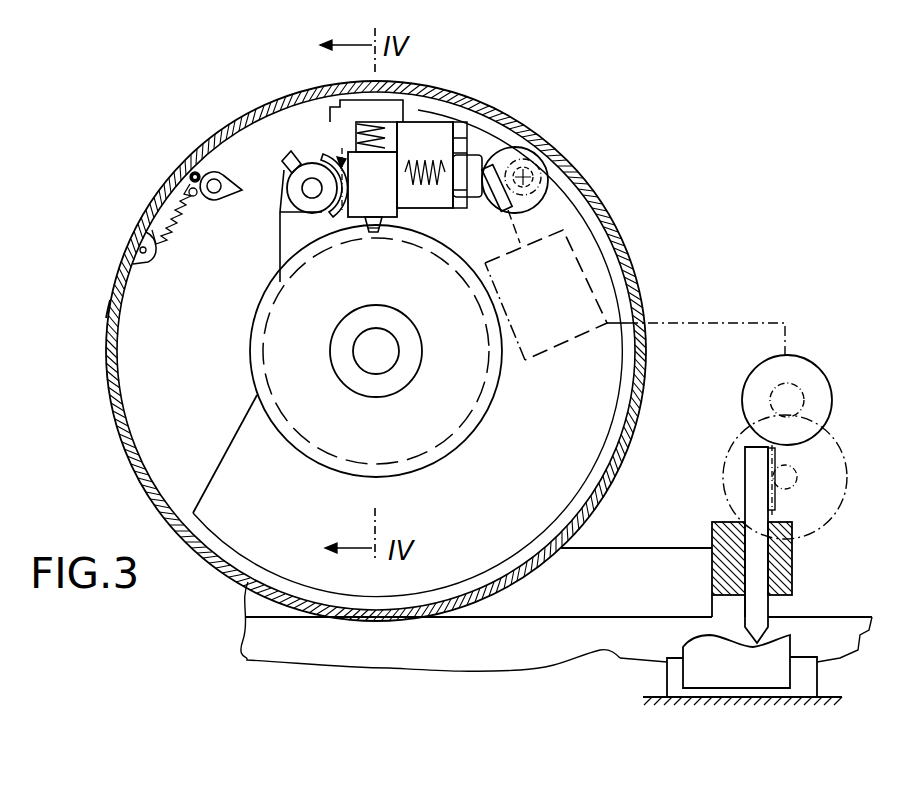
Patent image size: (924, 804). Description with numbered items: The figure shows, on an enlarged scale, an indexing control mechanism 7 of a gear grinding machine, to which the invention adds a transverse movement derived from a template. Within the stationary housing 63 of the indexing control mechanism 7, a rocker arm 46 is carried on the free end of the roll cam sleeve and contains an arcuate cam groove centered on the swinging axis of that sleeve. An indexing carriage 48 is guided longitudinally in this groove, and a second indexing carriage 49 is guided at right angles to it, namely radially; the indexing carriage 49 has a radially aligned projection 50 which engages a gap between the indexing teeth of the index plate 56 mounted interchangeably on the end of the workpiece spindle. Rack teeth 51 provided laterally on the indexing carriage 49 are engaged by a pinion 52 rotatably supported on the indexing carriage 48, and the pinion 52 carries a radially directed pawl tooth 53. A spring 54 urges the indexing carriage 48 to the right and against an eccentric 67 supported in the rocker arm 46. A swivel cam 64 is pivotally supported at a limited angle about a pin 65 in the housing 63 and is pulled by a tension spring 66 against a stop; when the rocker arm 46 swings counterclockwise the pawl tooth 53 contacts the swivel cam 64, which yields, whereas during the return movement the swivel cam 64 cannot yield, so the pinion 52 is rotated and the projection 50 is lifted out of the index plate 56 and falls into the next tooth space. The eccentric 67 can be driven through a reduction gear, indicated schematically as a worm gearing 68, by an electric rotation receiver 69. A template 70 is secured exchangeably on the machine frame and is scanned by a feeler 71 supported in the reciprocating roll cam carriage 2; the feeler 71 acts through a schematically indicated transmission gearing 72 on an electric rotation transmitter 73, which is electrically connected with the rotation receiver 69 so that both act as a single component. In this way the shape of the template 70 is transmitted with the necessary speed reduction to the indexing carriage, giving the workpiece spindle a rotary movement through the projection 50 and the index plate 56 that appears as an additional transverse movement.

The roll cam carriage 2 is at (607, 565).
The indexing control mechanism 7 is at (112, 437).
The rocker arm 46 is at (248, 440).
The indexing carriage 48 is at (415, 135).
The indexing carriage 49 is at (358, 165).
The projection 50 is at (375, 234).
The rack teeth 51 is at (335, 170).
The pinion 52 is at (343, 170).
The pawl tooth 53 is at (282, 162).
The spring 54 is at (437, 150).
The index plate 56 is at (270, 312).
The stationary housing 63 is at (106, 318).
The swivel cam 64 is at (236, 198).
The pin 65 is at (190, 173).
The tension spring 66 is at (153, 214).
The eccentric 67 is at (506, 153).
The worm gearing 68 is at (497, 208).
The electric rotation receiver 69 is at (580, 244).
The template 70 is at (700, 670).
The feeler 71 is at (780, 557).
The transmission gearing 72 is at (735, 472).
The electric rotation transmitter 73 is at (757, 400).